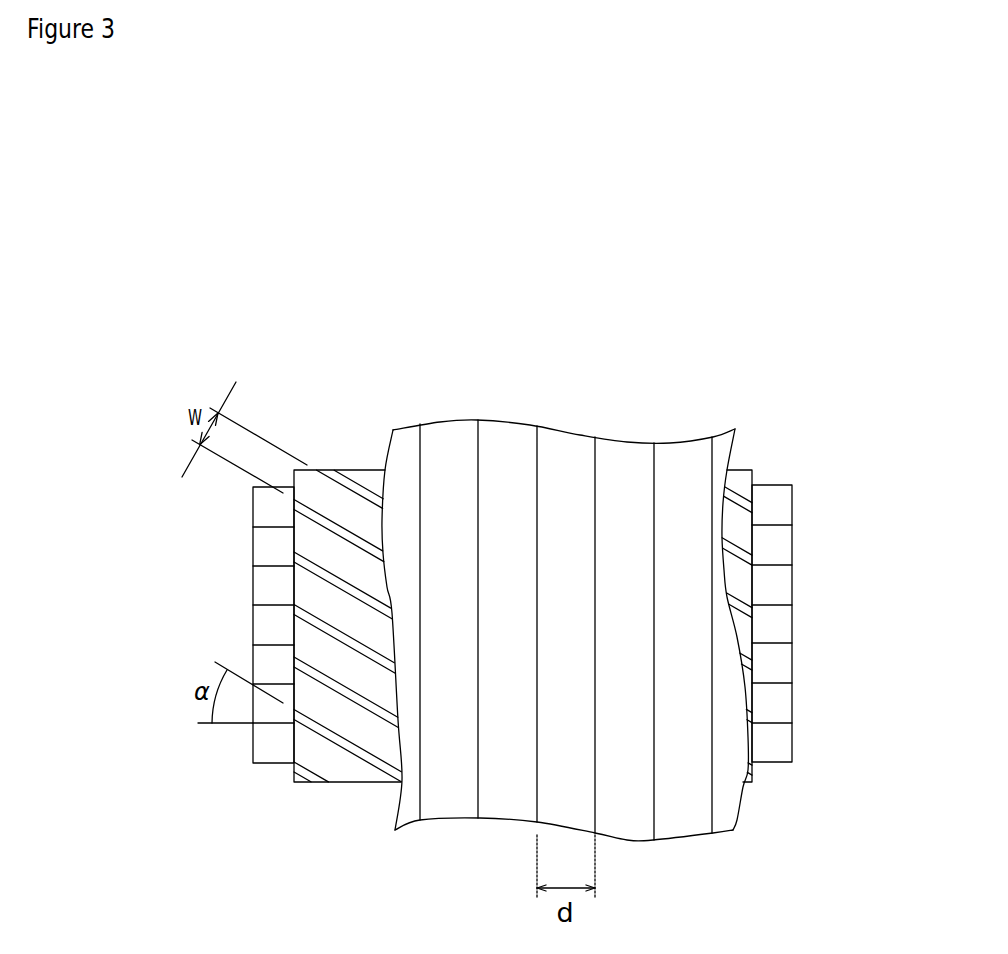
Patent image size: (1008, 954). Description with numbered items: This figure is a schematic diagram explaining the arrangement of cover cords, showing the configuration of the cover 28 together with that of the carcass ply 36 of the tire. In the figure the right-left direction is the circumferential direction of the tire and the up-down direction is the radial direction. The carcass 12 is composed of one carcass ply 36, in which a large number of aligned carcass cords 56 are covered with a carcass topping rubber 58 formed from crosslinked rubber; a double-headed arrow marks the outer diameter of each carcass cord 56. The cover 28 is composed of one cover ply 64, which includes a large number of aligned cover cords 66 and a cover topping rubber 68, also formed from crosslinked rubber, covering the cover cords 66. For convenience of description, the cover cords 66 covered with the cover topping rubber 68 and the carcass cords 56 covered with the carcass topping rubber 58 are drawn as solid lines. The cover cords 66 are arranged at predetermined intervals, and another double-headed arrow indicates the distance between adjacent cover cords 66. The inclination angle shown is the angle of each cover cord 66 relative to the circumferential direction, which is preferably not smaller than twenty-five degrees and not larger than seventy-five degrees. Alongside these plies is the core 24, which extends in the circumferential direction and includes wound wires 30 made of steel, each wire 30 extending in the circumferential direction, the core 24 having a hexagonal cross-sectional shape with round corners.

The carcass 12 is at (565, 646).
The core 24 is at (478, 628).
The cover 28 is at (461, 570).
The wire 30 is at (268, 743).
The carcass ply 36 is at (565, 646).
The carcass cord 56 is at (448, 442).
The carcass topping rubber 58 is at (507, 447).
The cover ply 64 is at (461, 570).
The cover cord 66 is at (322, 470).
The cover topping rubber 68 is at (303, 545).